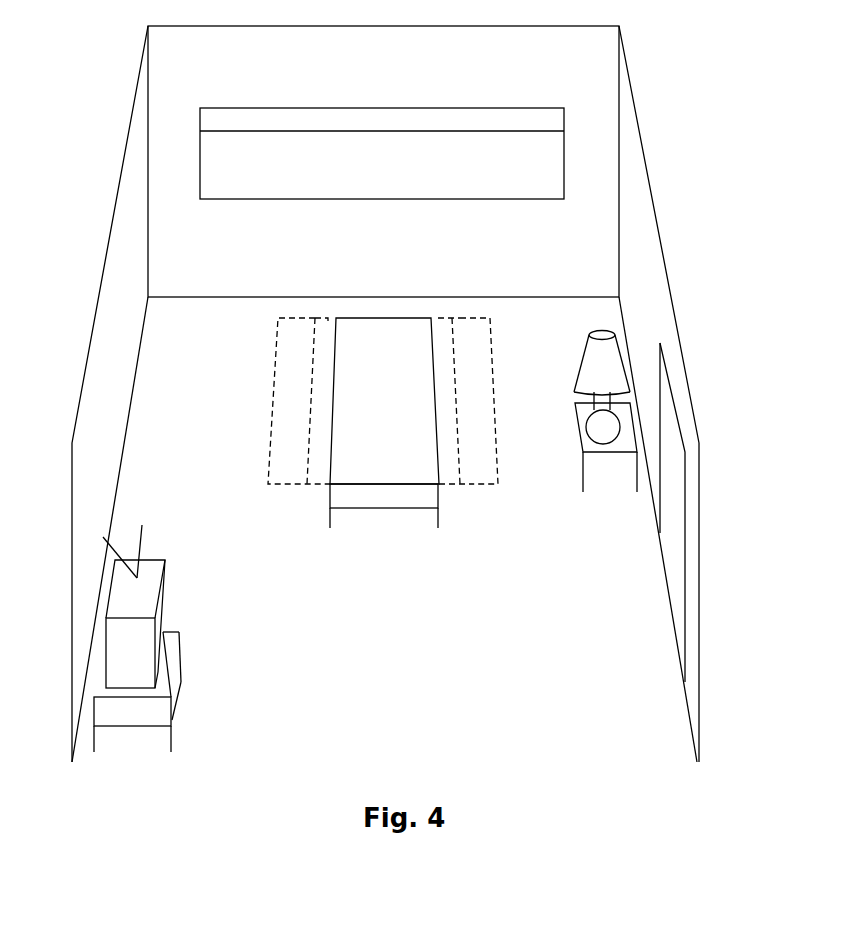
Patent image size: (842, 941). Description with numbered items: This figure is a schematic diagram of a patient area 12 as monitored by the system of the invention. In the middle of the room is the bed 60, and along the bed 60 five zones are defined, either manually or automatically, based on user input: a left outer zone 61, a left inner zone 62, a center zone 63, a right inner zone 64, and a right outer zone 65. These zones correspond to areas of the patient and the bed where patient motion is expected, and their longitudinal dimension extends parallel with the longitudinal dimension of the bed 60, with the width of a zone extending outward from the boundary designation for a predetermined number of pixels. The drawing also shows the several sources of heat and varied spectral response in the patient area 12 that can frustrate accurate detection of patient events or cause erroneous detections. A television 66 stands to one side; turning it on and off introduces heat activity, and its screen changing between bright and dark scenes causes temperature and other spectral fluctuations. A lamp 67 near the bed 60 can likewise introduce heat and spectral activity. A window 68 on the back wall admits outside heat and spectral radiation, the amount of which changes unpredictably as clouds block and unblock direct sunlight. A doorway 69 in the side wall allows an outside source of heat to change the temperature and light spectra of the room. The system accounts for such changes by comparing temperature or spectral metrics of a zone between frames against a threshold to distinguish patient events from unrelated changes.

The patient area 12 is at (104, 150).
The bed 60 is at (378, 516).
The left outer zone 61 is at (293, 325).
The left inner zone 62 is at (327, 325).
The center zone 63 is at (385, 325).
The right inner zone 64 is at (442, 323).
The right outer zone 65 is at (476, 323).
The television 66 is at (165, 598).
The lamp 67 is at (582, 355).
The window 68 is at (308, 200).
The doorway 69 is at (685, 587).